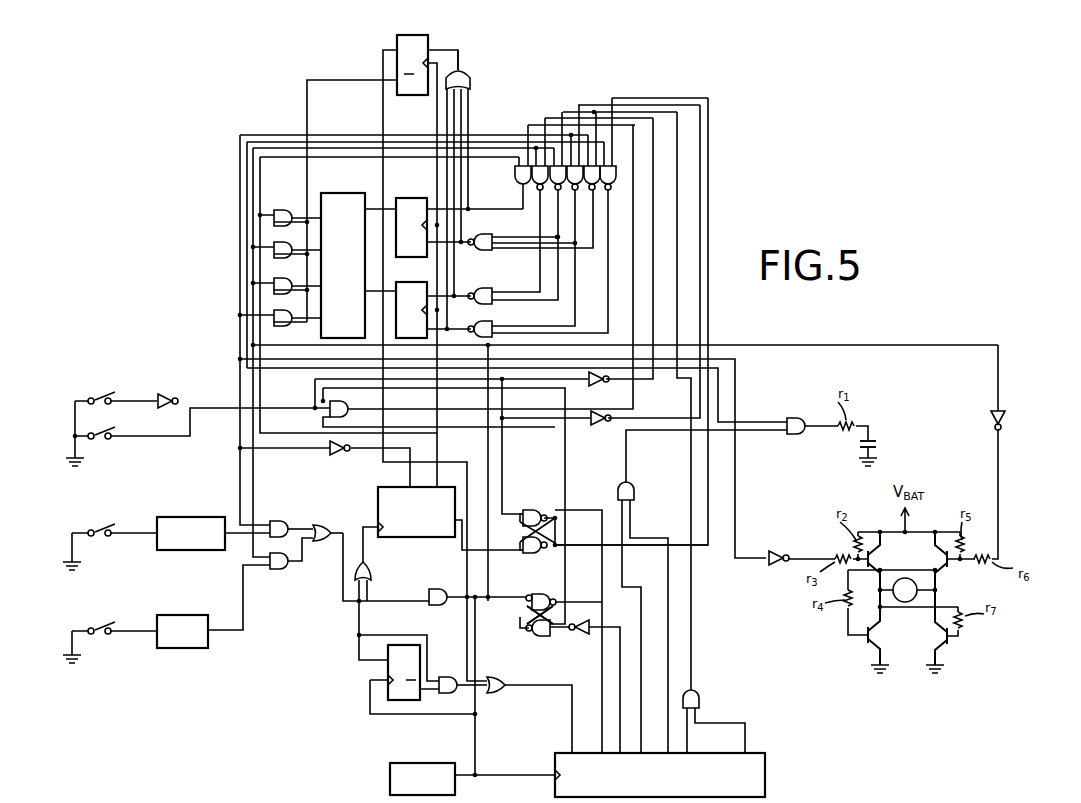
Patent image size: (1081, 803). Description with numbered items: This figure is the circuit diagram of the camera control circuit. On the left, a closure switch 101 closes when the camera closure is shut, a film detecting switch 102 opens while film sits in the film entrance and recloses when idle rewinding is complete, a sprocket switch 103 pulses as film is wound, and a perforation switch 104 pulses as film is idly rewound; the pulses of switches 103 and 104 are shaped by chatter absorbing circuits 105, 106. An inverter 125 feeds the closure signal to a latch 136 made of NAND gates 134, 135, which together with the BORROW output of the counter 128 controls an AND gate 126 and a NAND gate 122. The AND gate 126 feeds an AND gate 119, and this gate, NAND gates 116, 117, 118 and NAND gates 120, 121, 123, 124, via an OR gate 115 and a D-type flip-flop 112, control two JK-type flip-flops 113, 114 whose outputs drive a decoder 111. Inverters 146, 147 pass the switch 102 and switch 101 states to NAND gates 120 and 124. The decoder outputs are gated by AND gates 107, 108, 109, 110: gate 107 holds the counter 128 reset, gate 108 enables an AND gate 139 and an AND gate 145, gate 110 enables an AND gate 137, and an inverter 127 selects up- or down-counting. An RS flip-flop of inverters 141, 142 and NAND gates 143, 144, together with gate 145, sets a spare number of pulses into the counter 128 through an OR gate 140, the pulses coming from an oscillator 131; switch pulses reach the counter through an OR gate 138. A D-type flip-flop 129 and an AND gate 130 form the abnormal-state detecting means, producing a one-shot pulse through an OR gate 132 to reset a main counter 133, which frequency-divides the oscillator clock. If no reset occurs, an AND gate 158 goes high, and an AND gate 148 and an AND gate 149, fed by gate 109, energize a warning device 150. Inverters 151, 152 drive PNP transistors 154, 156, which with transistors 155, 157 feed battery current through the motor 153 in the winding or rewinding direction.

The closure switch 101 is at (108, 398).
The film detecting switch 102 is at (100, 440).
The sprocket switch 103 is at (108, 530).
The perforation switch 104 is at (108, 628).
The chatter absorbing circuit 105 is at (192, 517).
The chatter absorbing circuit 106 is at (192, 615).
The AND gate 107 is at (262, 214).
The AND gate 108 is at (262, 246).
The AND gate 109 is at (262, 282).
The AND gate 110 is at (262, 314).
The decoder 111 is at (345, 193).
The D-type flip-flop 112 is at (428, 40).
The JK-type flip-flop 113 is at (411, 198).
The JK-type flip-flop 114 is at (410, 282).
The OR gate 115 is at (467, 78).
The NAND gate 116 is at (488, 237).
The NAND gate 117 is at (487, 291).
The NAND gate 118 is at (487, 325).
The AND gate 119 is at (519, 164).
The NAND gate 120 is at (537, 164).
The NAND gate 121 is at (557, 164).
The NAND gate 122 is at (575, 164).
The NAND gate 123 is at (592, 164).
The NAND gate 124 is at (610, 164).
The inverter 125 is at (170, 390).
The AND gate 126 is at (330, 416).
The inverter 127 is at (334, 455).
The counter 128 is at (416, 537).
The D-type flip-flop 129 is at (400, 645).
The AND gate 130 is at (447, 677).
The oscillator 131 is at (425, 763).
The OR gate 132 is at (498, 694).
The main counter 133 is at (767, 757).
The NAND gate 134 is at (531, 510).
The NAND gate 135 is at (545, 553).
The latch 136 is at (542, 532).
The AND gate 137 is at (280, 521).
The OR gate 138 is at (319, 523).
The AND gate 139 is at (280, 570).
The OR gate 140 is at (371, 566).
The inverter 141 is at (527, 612).
The inverter 142 is at (580, 636).
The NAND gate 143 is at (556, 604).
The NAND gate 144 is at (540, 637).
The AND gate 145 is at (433, 588).
The inverter 146 is at (588, 380).
The inverter 147 is at (598, 425).
The AND gate 148 is at (634, 487).
The AND gate 149 is at (796, 435).
The warning device 150 is at (878, 443).
The inverter 151 is at (775, 550).
The inverter 152 is at (1005, 418).
The motor 153 is at (905, 602).
The PNP transistor 154 is at (882, 560).
The transistor 155 is at (869, 639).
The PNP transistor 156 is at (950, 568).
The NPN transistor 157 is at (950, 645).
The AND gate 158 is at (699, 696).